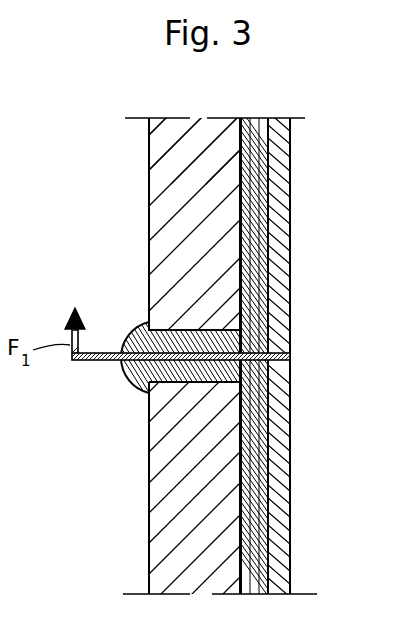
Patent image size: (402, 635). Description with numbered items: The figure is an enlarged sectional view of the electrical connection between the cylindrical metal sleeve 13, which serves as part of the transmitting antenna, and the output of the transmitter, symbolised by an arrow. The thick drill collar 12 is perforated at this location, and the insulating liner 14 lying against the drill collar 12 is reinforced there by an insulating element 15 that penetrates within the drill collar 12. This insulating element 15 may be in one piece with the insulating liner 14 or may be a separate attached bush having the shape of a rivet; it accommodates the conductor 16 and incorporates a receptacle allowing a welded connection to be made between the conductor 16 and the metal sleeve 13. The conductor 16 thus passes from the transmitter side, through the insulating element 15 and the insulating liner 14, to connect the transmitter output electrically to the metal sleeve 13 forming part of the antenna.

The drill collar 12 is at (167, 209).
The metal sleeve 13 is at (282, 224).
The insulating liner 14 is at (257, 480).
The insulating element 15 is at (190, 373).
The conductor 16 is at (110, 360).